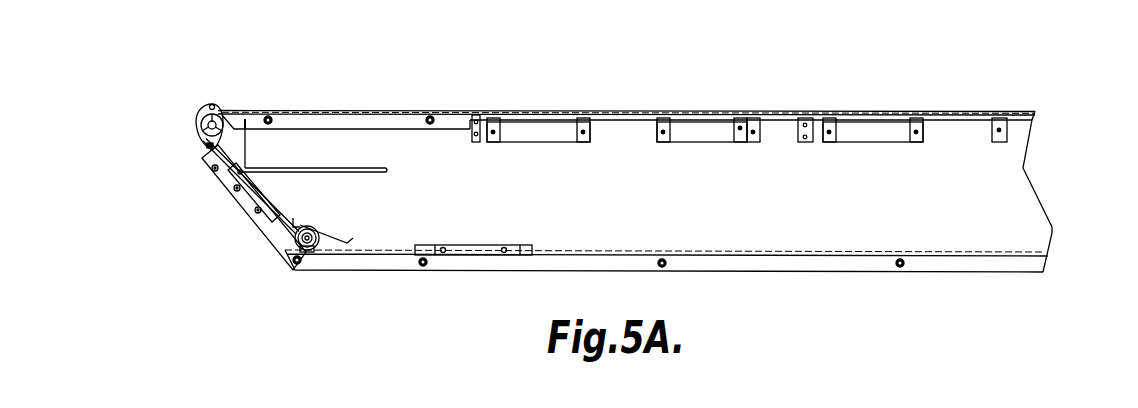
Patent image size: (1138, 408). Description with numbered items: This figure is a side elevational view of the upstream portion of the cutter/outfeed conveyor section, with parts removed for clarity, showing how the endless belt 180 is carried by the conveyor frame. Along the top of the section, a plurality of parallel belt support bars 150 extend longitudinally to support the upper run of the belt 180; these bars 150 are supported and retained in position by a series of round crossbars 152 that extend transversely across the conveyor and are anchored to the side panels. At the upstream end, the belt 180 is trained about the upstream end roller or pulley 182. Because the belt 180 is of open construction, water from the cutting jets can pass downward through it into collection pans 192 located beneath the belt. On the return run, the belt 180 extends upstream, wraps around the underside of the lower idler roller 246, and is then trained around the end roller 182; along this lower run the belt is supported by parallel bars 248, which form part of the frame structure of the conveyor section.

The belt support bar 150 is at (372, 118).
The round crossbar 152 is at (438, 115).
The endless belt 180 is at (950, 250).
The upstream end roller 182 is at (201, 112).
The collection pan 192 is at (542, 130).
The lower idler roller 246 is at (290, 243).
The parallel bar 248 is at (825, 272).